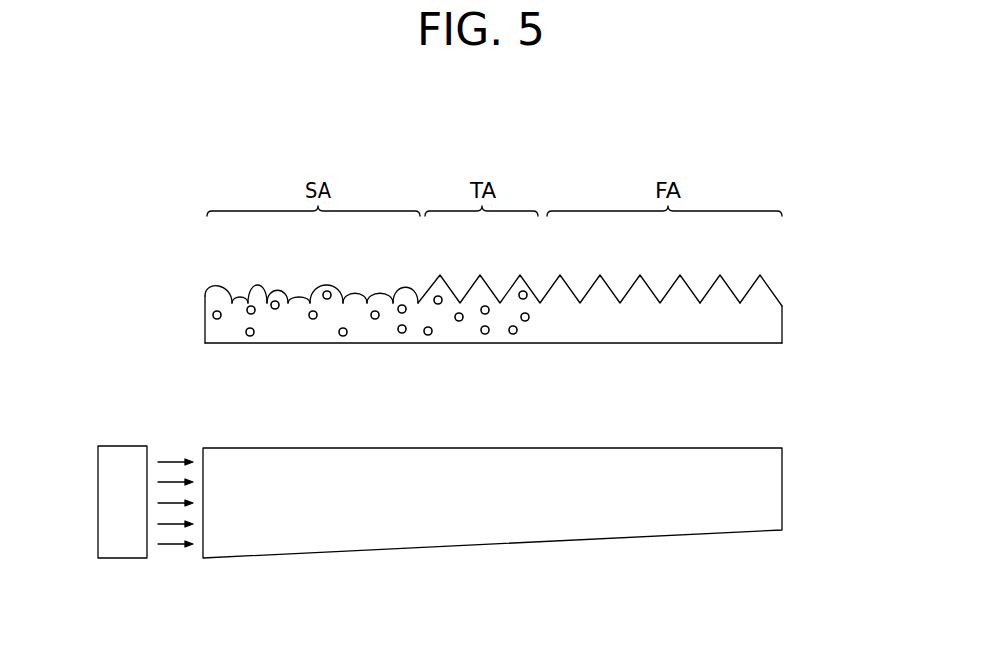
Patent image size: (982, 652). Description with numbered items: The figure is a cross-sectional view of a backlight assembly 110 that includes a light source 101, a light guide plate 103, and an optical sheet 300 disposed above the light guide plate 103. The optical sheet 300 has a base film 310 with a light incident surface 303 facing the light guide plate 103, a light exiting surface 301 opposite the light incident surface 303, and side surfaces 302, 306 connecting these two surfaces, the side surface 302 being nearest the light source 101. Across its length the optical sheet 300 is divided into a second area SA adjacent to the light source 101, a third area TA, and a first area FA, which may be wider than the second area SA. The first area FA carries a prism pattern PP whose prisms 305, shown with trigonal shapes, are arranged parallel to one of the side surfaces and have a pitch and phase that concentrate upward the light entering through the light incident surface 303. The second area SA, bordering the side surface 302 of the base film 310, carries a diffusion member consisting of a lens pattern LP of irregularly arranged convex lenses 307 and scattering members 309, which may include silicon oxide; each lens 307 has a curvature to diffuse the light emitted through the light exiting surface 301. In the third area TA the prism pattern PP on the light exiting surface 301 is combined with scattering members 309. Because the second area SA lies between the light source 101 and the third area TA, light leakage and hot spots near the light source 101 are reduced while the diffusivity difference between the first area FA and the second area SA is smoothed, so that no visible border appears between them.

The backlight assembly 110 is at (376, 142).
The optical sheet 300 is at (737, 330).
The light exiting surface 301 is at (772, 287).
The side surface 302 is at (205, 297).
The light incident surface 303 is at (660, 343).
The prisms 305 is at (697, 292).
The side surface 306 is at (782, 314).
The lenses 307 is at (253, 285).
The scattering members 309 is at (247, 331).
The base film 310 is at (176, 288).
The light guide plate 103 is at (778, 490).
The light source 101 is at (122, 556).